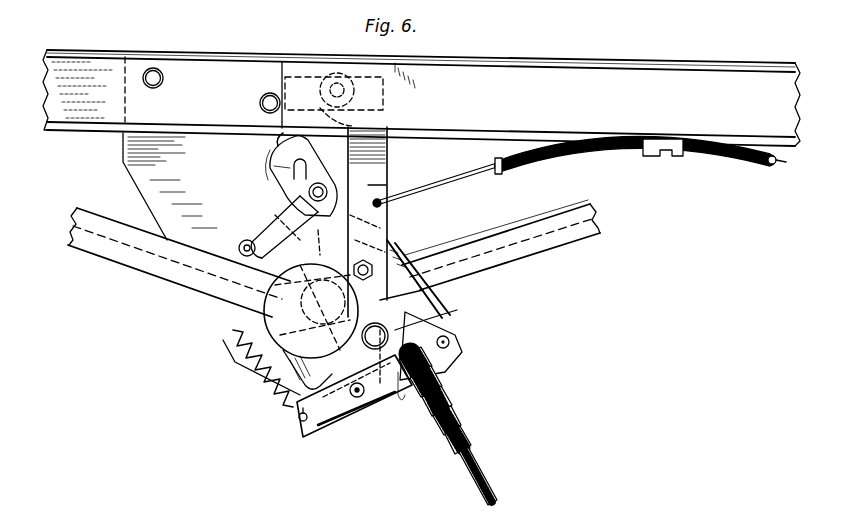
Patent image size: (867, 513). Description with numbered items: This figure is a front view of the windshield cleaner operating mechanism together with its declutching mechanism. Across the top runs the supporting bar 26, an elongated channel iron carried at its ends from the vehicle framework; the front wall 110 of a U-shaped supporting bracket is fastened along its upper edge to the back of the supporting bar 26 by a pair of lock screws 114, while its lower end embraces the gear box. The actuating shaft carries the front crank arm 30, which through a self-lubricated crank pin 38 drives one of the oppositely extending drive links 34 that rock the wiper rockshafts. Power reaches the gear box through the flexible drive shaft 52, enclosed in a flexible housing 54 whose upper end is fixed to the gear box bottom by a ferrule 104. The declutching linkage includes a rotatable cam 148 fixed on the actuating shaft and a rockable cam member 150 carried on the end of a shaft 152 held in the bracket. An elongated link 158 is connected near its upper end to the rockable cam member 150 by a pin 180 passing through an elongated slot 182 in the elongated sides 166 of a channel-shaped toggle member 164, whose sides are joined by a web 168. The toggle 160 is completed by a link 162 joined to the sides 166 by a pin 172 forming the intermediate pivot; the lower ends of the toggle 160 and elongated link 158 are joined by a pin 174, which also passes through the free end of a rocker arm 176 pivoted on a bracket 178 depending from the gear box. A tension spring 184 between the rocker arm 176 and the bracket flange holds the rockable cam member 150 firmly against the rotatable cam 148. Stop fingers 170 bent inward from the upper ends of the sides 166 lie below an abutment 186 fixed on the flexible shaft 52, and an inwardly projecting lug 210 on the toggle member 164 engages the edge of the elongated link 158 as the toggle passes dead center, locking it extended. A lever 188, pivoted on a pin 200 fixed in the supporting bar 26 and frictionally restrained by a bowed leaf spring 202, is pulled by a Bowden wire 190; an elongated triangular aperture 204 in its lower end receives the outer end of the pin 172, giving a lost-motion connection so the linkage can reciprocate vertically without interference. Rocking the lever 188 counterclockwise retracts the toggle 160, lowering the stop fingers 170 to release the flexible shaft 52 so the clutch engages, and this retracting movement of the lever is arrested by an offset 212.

The supporting bar 26 is at (737, 113).
The lock screws 114 is at (158, 69).
The pin 200 is at (340, 85).
The bowed leaf spring 202 is at (283, 62).
The front wall 110 is at (136, 172).
The drive links 34 is at (107, 243).
The stop or abutment 186 is at (268, 148).
The stop fingers 170 is at (272, 170).
The elongated sides 166 is at (298, 141).
The elongated slots 182 is at (272, 190).
The rockable cam member 150 is at (265, 213).
The shaft 152 is at (237, 245).
The pins 180 is at (297, 235).
The rotatable cams 148 is at (297, 257).
The web 168 is at (388, 158).
The lever 188 is at (388, 189).
The lug 210 is at (382, 211).
The offset 212 is at (415, 186).
The Bowden wire 190 is at (500, 172).
The channel-shaped toggle member 164 is at (370, 128).
The pins 174 is at (448, 345).
The links 162 is at (447, 314).
The pins 172 is at (405, 255).
The toggle 160 is at (415, 280).
The elongated link 158 is at (423, 289).
The triangular shaped aperture 204 is at (457, 311).
The ferrule 104 is at (462, 401).
The flexible housing 54 is at (481, 451).
The flexible drive shaft 52 is at (497, 489).
The front crank arm 30 is at (268, 373).
The tension springs 184 is at (272, 396).
The rocker arms 176 is at (315, 440).
The bracket 178 is at (372, 414).
The crank pins 38 is at (403, 380).